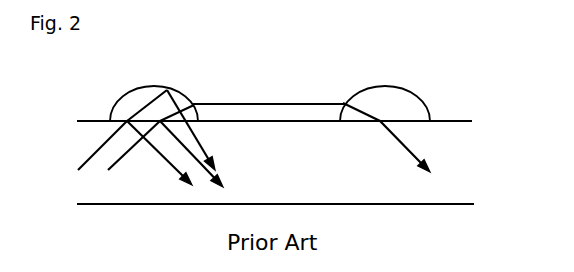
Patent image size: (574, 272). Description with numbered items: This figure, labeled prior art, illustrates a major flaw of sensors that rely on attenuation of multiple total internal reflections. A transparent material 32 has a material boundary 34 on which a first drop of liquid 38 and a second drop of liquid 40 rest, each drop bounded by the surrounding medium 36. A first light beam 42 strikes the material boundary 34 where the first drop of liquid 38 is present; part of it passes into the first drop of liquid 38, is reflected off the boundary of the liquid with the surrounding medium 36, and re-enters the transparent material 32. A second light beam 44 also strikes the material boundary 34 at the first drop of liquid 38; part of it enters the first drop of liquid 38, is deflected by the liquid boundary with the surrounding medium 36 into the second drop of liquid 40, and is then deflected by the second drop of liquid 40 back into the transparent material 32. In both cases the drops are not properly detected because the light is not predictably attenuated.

The transparent material 32 is at (302, 152).
The material boundary 34 is at (448, 120).
The surrounding medium 36 is at (269, 74).
The first drop of liquid 38 is at (128, 103).
The second drop of liquid 40 is at (365, 100).
The first light beam 42 is at (98, 147).
The second light beam 44 is at (120, 160).